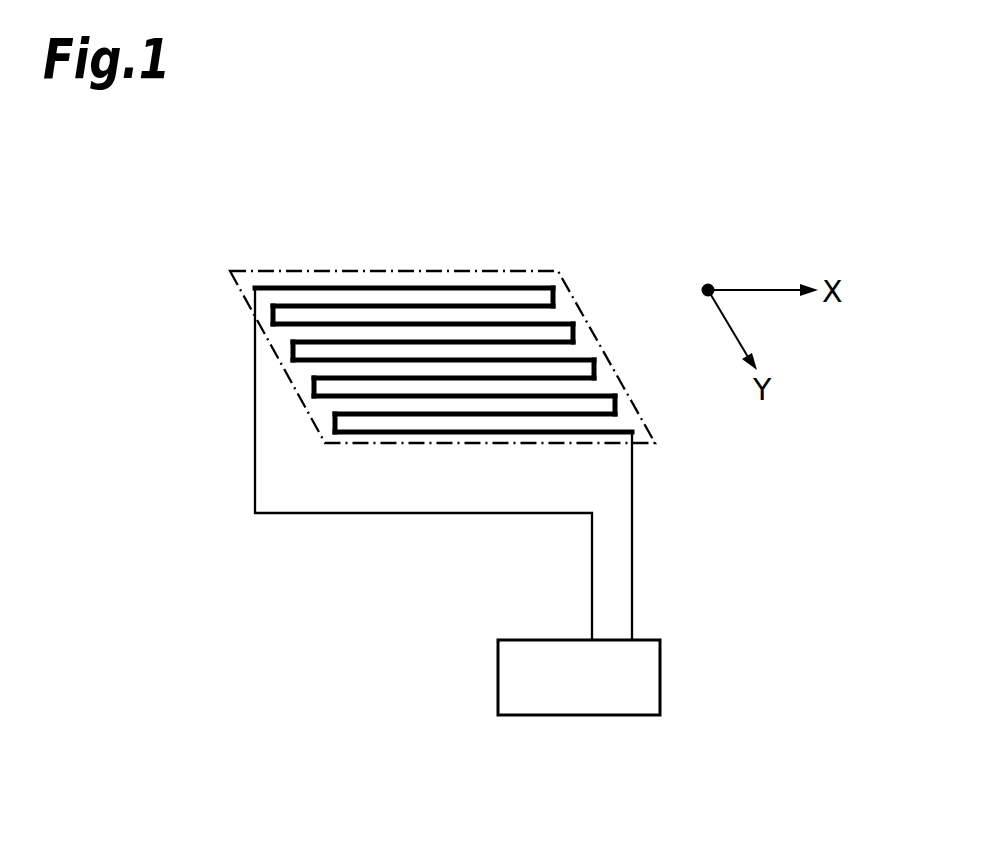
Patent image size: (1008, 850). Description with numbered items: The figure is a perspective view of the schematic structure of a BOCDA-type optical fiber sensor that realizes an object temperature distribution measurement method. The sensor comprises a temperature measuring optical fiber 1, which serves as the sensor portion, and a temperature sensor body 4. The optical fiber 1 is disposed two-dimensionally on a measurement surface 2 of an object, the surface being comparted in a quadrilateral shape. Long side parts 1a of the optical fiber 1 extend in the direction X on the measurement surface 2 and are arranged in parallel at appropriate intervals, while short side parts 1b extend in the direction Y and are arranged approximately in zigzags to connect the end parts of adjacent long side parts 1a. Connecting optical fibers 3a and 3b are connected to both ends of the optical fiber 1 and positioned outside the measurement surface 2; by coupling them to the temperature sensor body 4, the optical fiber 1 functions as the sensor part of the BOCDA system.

The temperature measuring optical fiber 1 is at (429, 344).
The long side part 1a is at (374, 305).
The short side part 1b is at (318, 390).
The measurement surface 2 is at (572, 294).
The connecting optical fiber 3a is at (632, 570).
The connecting optical fiber 3b is at (398, 515).
The temperature sensor body 4 is at (528, 680).